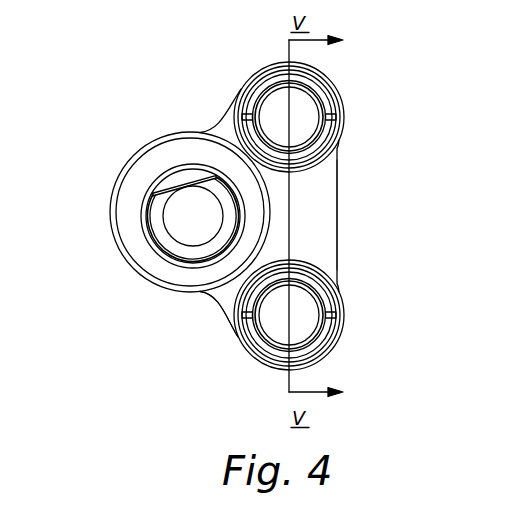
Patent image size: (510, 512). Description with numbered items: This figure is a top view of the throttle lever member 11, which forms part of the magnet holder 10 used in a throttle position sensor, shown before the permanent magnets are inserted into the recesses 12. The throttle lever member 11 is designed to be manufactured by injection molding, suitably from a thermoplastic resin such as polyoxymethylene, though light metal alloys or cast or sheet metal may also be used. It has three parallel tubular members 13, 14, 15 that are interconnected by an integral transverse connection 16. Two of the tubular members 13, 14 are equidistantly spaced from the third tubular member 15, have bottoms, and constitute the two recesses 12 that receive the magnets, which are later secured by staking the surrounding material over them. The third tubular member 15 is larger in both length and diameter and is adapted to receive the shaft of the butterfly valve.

The magnet holder 10 is at (128, 159).
The throttle lever member 11 is at (222, 302).
The recess 12 is at (273, 106).
The tubular member 13 is at (311, 98).
The tubular member 14 is at (315, 291).
The tubular member 15 is at (130, 231).
The transverse connection 16 is at (322, 211).